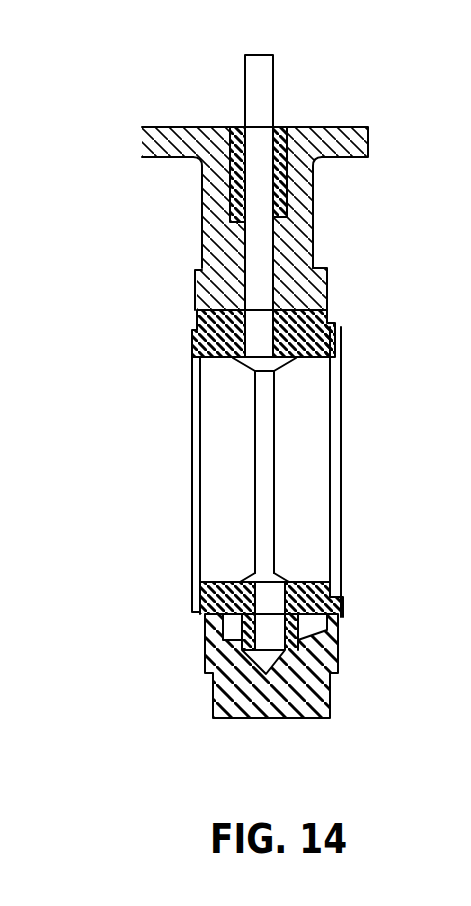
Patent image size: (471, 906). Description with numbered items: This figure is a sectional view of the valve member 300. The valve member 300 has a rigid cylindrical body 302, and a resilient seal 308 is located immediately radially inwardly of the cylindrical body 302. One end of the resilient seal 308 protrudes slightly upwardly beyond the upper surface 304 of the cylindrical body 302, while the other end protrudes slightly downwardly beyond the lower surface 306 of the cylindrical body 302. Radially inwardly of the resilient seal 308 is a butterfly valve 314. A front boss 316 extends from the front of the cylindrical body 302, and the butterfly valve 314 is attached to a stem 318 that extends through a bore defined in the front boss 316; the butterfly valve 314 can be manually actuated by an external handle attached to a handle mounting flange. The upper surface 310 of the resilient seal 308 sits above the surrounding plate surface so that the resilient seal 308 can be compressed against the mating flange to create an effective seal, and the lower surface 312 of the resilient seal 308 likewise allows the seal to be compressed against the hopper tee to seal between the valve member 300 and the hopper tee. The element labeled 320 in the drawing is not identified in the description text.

The valve assembly 300 is at (398, 129).
The lower body 302 is at (205, 658).
The upper body lower portion 304 is at (195, 294).
The body step 306 is at (328, 275).
The upper disk 308 is at (234, 360).
The upper seal 310 is at (192, 331).
The seal outer edge 312 is at (336, 330).
The stem 314 is at (275, 461).
The upper body neck 316 is at (314, 209).
The shaft 318 is at (256, 228).
The flange 320 is at (143, 128).